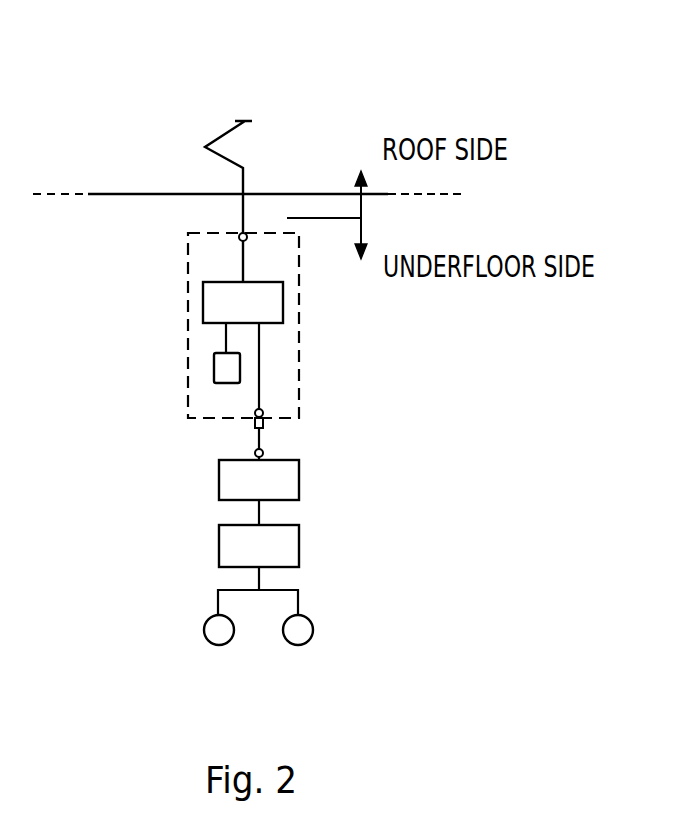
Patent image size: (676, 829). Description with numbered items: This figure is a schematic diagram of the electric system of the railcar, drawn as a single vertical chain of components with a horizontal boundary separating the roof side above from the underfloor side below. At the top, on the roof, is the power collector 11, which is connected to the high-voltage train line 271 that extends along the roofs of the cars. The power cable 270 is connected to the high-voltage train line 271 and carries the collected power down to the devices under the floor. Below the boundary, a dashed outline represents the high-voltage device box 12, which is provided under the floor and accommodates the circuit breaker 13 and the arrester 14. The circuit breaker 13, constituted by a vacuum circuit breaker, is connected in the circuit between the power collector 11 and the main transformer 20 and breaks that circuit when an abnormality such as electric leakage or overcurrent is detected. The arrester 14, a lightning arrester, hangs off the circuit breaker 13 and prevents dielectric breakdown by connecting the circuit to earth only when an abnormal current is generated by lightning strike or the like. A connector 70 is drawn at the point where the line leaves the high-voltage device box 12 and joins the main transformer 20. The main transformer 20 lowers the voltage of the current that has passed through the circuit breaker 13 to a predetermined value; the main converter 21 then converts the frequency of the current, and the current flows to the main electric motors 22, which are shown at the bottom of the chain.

The power collector 11 is at (226, 134).
The power cable 270 is at (243, 210).
The high-voltage train line 271 is at (283, 193).
The high-voltage device box 12 is at (300, 323).
The circuit breaker 13 is at (203, 297).
The arrester 14 is at (213, 372).
The connector 70 is at (258, 440).
The main transformer 20 is at (300, 482).
The main converter 21 is at (300, 545).
The main electric motors 22 is at (313, 634).